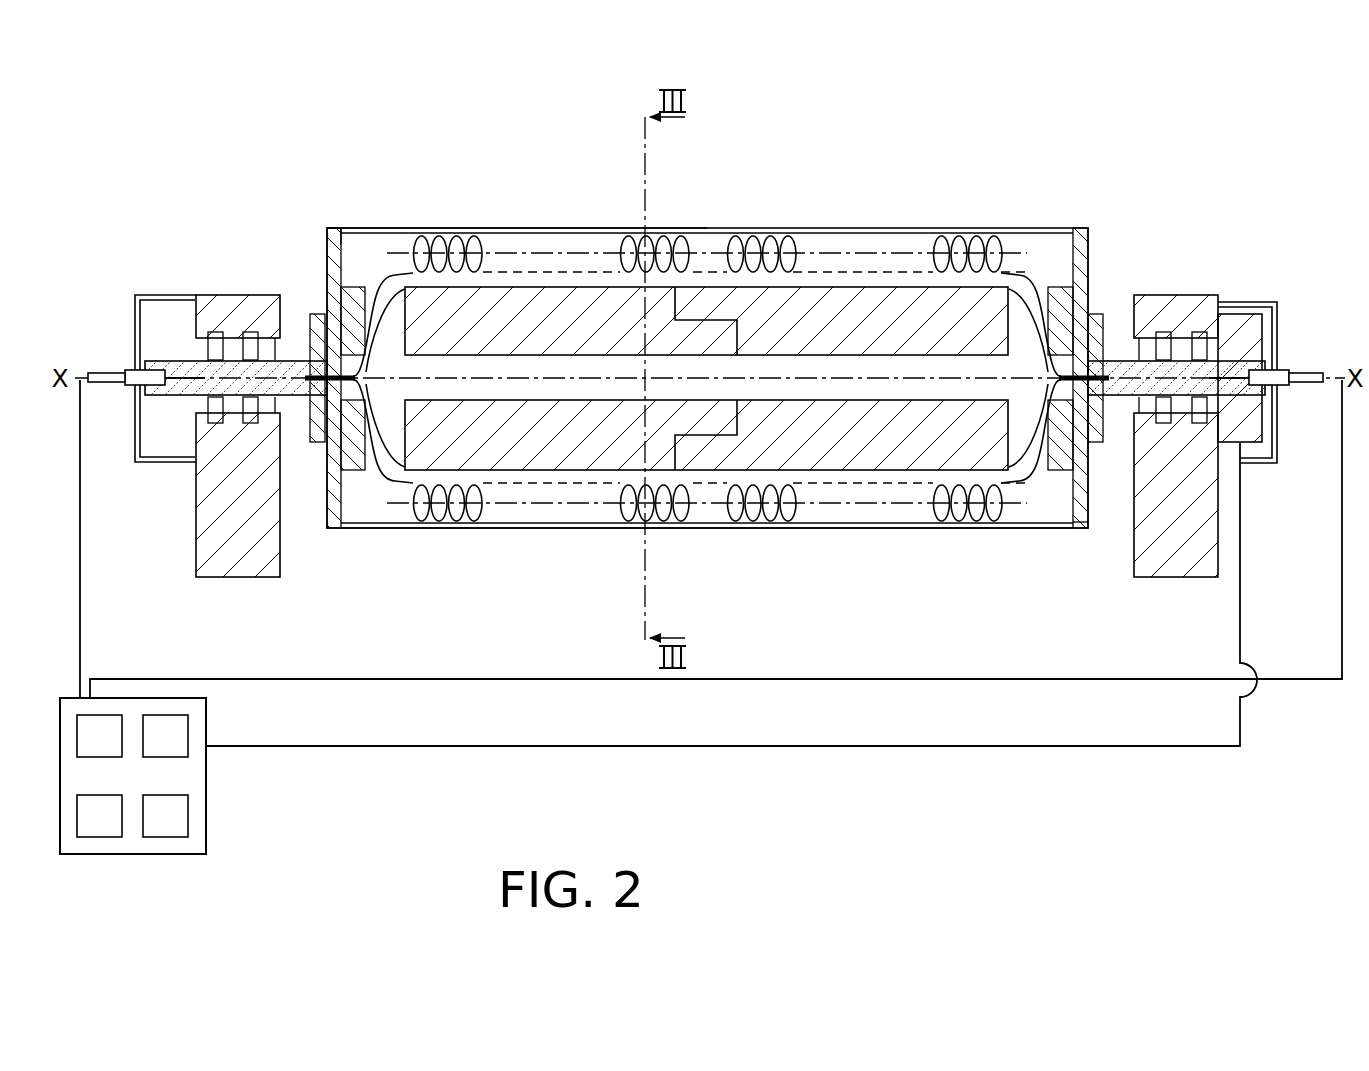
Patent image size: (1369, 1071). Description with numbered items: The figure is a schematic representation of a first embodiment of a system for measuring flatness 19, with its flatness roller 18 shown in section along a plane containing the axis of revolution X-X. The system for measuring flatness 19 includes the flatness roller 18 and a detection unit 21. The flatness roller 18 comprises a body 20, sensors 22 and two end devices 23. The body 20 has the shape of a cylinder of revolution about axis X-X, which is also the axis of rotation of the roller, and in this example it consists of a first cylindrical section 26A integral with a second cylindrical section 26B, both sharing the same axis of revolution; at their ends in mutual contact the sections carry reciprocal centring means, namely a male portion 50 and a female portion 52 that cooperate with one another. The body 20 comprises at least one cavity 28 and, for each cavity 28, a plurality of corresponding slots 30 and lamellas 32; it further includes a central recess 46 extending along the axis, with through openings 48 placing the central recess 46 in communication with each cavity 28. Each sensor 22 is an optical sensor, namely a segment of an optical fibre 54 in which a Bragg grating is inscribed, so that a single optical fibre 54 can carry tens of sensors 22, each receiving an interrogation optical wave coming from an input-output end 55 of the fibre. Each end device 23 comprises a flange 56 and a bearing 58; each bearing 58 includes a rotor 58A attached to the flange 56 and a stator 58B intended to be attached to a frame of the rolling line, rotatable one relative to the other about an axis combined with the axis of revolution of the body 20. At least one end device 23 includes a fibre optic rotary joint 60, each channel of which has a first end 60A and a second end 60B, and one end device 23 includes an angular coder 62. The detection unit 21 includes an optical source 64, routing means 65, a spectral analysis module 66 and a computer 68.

The flatness roller 18 is at (792, 130).
The system for measuring flatness 19 is at (1256, 127).
The body 20 is at (500, 534).
The detection unit 21 is at (133, 825).
The sensor 22 is at (478, 248).
The end device 23 is at (307, 295).
The first cylindrical section 26A is at (558, 226).
The second cylindrical section 26B is at (908, 225).
The cavity 28 is at (876, 243).
The slot 30 is at (563, 530).
The lamella 32 is at (591, 530).
The central recess 46 is at (547, 390).
The through opening 48 is at (1068, 527).
The male portion 50 is at (705, 420).
The female portion 52 is at (735, 420).
The optical fibre 54 is at (388, 275).
The input-output end 55 is at (366, 371).
The flange 56 is at (333, 228).
The bearing 58 is at (318, 312).
The rotor 58A is at (300, 390).
The stator 58B is at (213, 418).
The fibre optic rotary joint 60 is at (133, 372).
The first end 60A is at (128, 358).
The second end 60B is at (158, 375).
The angular coder 62 is at (1239, 318).
The optical source 64 is at (99, 736).
The routing means 65 is at (165, 736).
The spectral analysis module 66 is at (99, 816).
The computer 68 is at (165, 816).